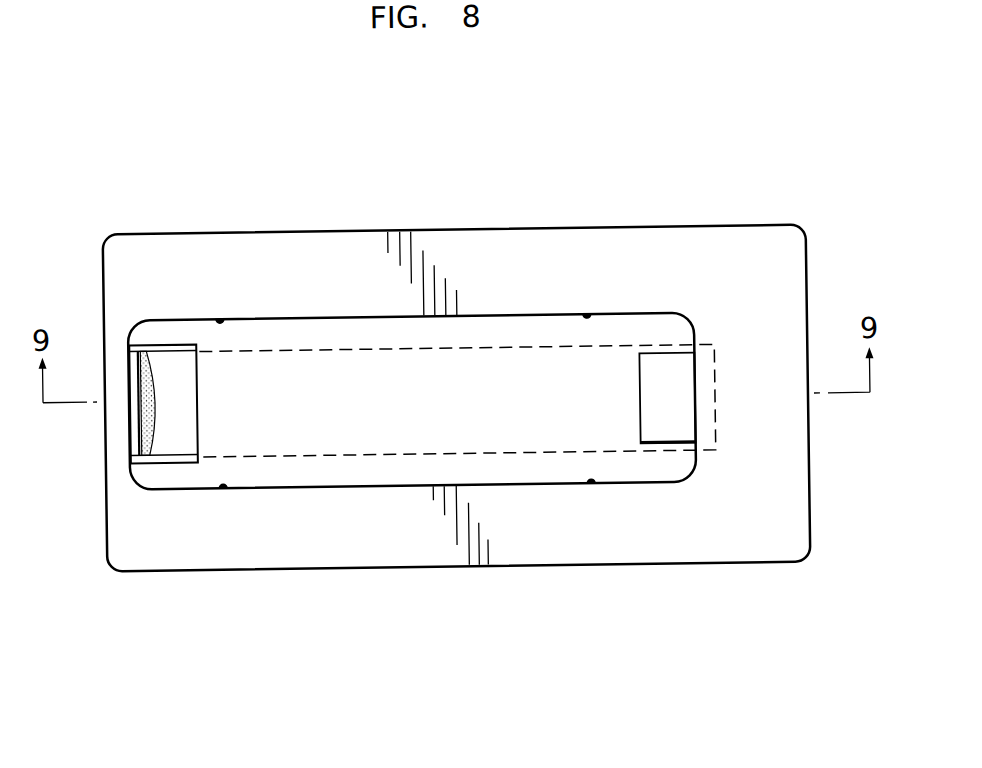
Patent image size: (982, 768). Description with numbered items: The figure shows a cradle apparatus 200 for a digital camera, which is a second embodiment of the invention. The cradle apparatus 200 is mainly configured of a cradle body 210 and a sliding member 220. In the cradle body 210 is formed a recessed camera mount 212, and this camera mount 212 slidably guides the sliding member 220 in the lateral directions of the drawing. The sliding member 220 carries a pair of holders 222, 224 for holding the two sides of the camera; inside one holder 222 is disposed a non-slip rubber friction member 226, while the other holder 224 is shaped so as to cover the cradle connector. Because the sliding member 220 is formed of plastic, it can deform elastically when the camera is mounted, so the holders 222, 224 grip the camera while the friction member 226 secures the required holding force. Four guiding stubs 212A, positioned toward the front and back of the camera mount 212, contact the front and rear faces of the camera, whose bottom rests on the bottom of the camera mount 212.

The cradle apparatus 200 is at (731, 198).
The cradle body 210 is at (603, 229).
The camera mount 212 is at (405, 485).
The guiding stubs 212A is at (219, 320).
The sliding member 220 is at (177, 456).
The holder 222 is at (138, 433).
The holder 224 is at (636, 412).
The friction member 226 is at (153, 396).